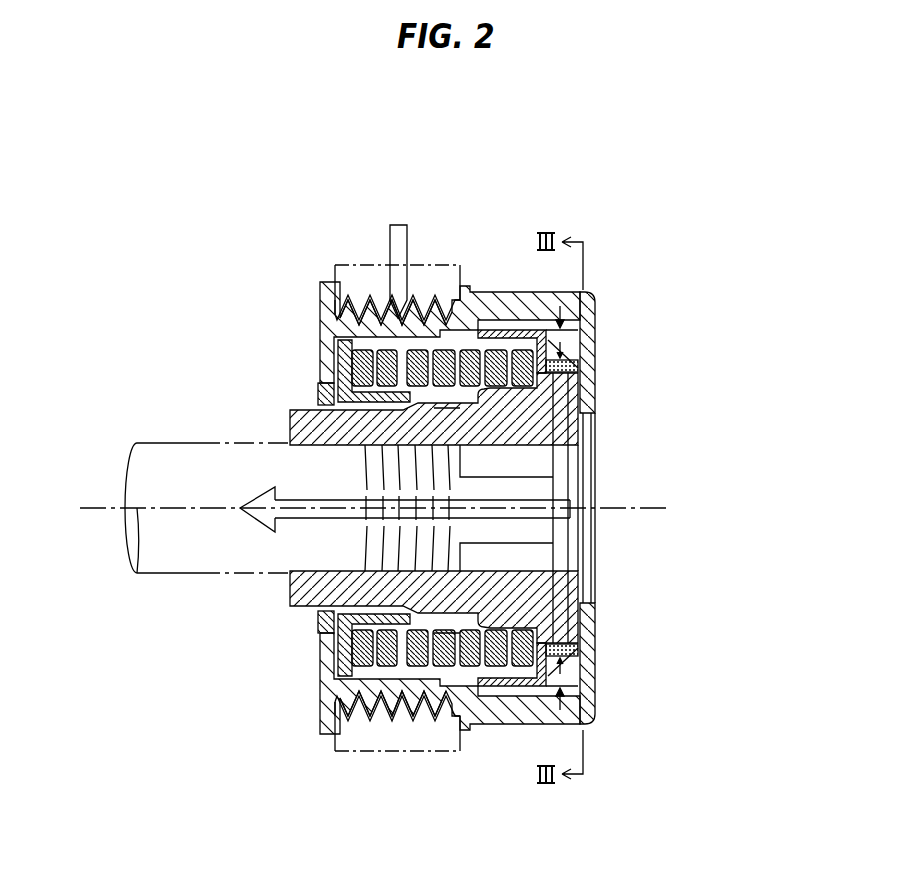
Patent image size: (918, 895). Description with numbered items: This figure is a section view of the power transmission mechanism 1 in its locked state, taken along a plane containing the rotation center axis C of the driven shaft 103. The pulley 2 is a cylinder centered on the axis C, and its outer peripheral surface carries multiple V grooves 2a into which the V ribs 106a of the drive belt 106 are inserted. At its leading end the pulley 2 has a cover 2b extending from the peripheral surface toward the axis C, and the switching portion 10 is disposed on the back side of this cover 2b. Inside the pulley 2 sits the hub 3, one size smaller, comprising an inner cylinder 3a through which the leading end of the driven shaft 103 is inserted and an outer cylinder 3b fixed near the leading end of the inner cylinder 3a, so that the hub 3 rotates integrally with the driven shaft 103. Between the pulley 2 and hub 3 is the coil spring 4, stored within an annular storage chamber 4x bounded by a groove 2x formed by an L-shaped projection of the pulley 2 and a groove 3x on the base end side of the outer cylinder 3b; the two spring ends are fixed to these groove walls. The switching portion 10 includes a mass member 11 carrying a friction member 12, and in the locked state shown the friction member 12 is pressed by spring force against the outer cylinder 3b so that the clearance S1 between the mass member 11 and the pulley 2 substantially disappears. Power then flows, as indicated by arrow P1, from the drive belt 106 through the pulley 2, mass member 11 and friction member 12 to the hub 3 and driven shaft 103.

The power transmission mechanism 1 is at (404, 460).
The pulley 2 is at (502, 292).
The V grooves 2a is at (443, 318).
The cover 2b is at (597, 383).
The groove 2x is at (326, 395).
The hub 3 is at (648, 420).
The inner cylinder 3a is at (506, 408).
The outer cylinder 3b is at (508, 446).
The groove 3x is at (479, 397).
The coil spring 4 is at (357, 360).
The storage chamber 4x is at (447, 509).
The switching portion 10 is at (582, 509).
The mass member 11 is at (575, 345).
The friction member 12 is at (578, 366).
The driven shaft 103 is at (167, 442).
The drive belt 106 is at (346, 265).
The V ribs 106a is at (350, 326).
The arrow P1 is at (398, 257).
The clearance S1 is at (578, 322).
The rotation center axis C is at (100, 506).